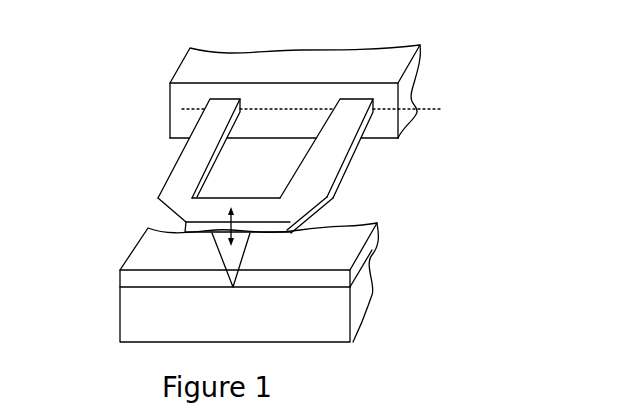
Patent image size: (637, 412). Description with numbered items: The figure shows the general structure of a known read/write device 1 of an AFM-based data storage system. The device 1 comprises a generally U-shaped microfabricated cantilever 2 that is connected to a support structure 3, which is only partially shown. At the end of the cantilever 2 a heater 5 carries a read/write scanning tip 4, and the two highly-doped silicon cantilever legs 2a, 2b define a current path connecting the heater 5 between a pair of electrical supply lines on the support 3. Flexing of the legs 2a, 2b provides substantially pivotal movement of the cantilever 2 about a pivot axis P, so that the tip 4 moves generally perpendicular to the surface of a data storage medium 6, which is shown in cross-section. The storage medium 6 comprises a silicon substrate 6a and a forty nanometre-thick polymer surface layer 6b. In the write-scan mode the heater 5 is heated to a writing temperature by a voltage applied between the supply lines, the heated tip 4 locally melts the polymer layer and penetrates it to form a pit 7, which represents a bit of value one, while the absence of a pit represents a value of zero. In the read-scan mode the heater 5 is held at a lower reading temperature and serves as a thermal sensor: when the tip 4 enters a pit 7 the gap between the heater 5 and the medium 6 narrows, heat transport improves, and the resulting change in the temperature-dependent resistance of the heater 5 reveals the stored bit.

The read/write device 1 is at (441, 169).
The cantilever 2 is at (172, 170).
The cantilever leg 2a is at (216, 160).
The cantilever leg 2b is at (349, 165).
The support structure 3 is at (170, 105).
The read/write scanning tip 4 is at (238, 250).
The heater 5 is at (178, 233).
The data storage medium 6 is at (380, 242).
The silicon substrate 6a is at (118, 320).
The polymer surface layer 6b is at (118, 283).
The pit 7 is at (226, 288).
The pivot axis P is at (322, 110).